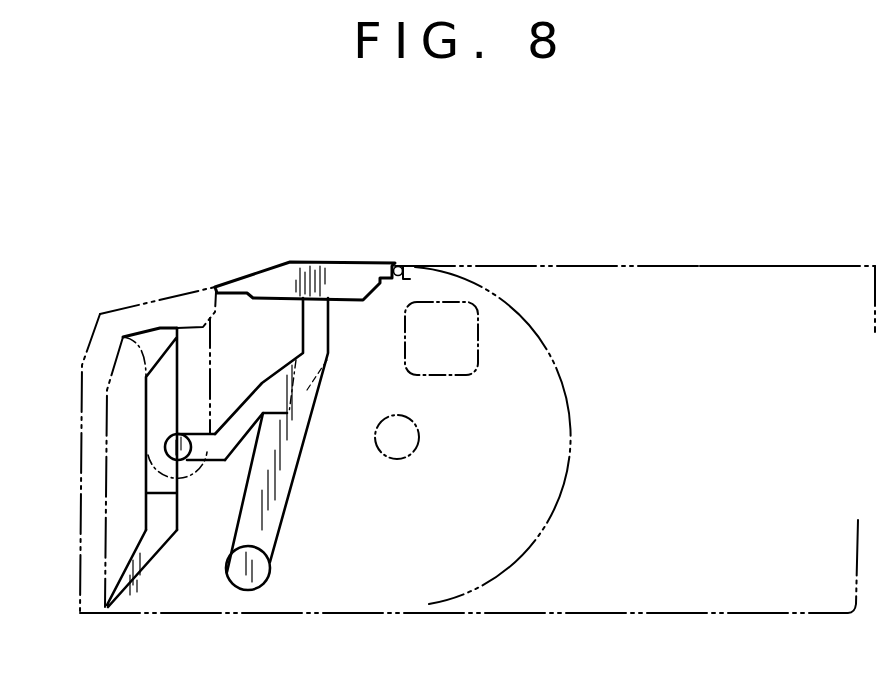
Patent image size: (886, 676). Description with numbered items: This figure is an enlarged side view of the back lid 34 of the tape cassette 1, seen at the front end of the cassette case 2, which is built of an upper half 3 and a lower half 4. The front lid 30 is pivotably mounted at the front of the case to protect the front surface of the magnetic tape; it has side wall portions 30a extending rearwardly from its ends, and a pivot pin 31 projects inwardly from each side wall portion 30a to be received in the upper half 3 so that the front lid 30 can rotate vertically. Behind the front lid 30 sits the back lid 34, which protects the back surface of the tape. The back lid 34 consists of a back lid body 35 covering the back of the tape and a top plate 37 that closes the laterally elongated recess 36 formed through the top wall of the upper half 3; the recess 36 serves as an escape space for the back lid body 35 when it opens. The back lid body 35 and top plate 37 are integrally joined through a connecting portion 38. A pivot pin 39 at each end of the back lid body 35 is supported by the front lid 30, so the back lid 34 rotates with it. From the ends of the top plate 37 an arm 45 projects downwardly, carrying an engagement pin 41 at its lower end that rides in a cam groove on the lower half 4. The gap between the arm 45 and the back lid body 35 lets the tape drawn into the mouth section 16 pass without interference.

The tape cassette 1 is at (695, 265).
The cassette case 2 is at (759, 265).
The upper half 3 is at (835, 265).
The lower half 4 is at (695, 614).
The mouth section 16 is at (176, 568).
The front lid 30 is at (85, 384).
The side wall portion 30a is at (500, 582).
The pivot pin 31 is at (378, 457).
The back lid 34 is at (310, 260).
The back lid body 35 is at (147, 390).
The laterally elongated recess 36 is at (388, 262).
The top plate 37 is at (353, 272).
The connecting portion 38 is at (233, 443).
The pivot pin 39 is at (170, 448).
The engagement pin 41 is at (253, 590).
The arm 45 is at (302, 440).